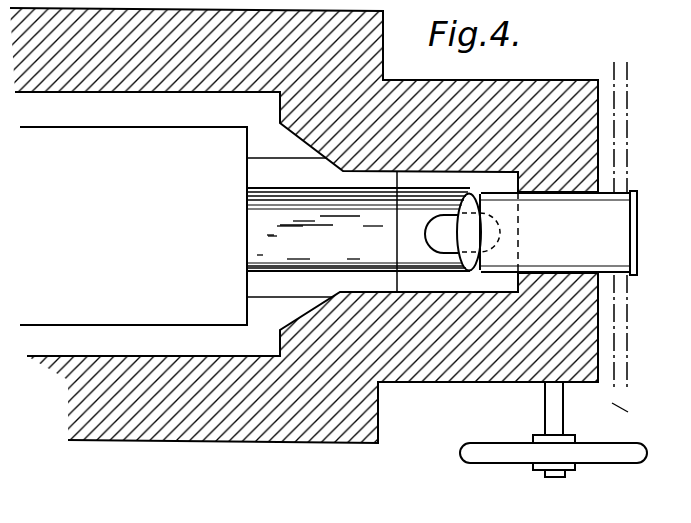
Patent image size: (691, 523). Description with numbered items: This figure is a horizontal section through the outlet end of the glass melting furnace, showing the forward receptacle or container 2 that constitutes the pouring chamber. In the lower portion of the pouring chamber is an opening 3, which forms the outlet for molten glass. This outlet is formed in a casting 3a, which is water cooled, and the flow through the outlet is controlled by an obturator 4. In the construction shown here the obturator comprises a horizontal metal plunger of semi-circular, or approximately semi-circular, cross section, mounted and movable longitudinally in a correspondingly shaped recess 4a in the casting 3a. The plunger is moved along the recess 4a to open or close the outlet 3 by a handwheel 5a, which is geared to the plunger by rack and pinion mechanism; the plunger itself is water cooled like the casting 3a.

The forward receptacle or container 2 is at (510, 100).
The opening 3 is at (462, 232).
The casting 3a is at (274, 280).
The obturator 4 is at (559, 233).
The recess 4a is at (358, 229).
The handwheel 5a is at (503, 448).